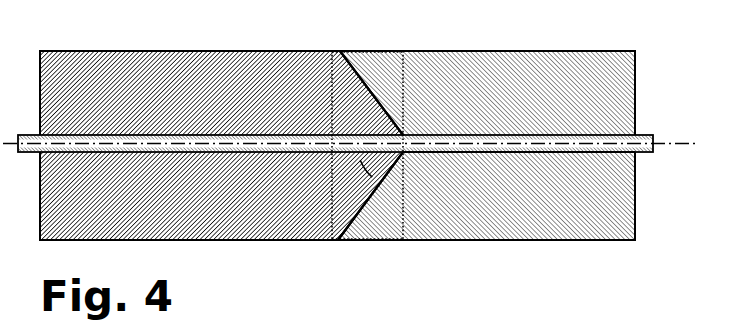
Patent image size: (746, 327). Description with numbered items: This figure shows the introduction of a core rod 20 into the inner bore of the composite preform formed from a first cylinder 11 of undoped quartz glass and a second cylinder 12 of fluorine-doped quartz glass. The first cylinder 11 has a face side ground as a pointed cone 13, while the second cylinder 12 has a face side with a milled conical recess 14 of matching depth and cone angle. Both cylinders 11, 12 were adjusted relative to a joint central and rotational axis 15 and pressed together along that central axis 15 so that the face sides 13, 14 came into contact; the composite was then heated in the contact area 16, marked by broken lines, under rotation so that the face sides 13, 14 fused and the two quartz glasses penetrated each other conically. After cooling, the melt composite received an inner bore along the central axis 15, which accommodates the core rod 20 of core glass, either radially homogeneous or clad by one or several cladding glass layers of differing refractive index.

The first cylinder 11 is at (109, 109).
The second cylinder 12 is at (583, 109).
The pointed cone 13 is at (332, 102).
The conical recess 14 is at (383, 218).
The central axis 15 is at (660, 143).
The contact area 16 is at (352, 246).
The core rod 20 is at (478, 150).